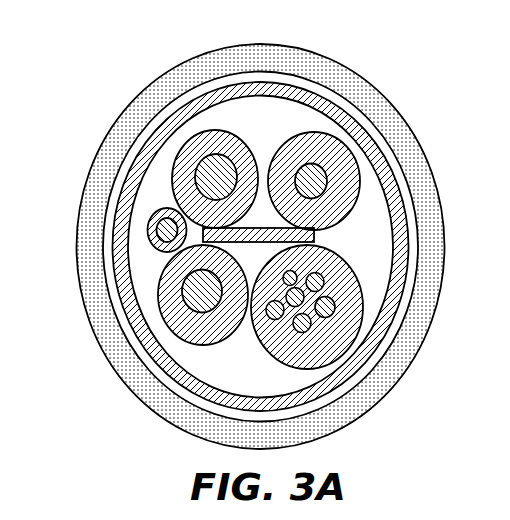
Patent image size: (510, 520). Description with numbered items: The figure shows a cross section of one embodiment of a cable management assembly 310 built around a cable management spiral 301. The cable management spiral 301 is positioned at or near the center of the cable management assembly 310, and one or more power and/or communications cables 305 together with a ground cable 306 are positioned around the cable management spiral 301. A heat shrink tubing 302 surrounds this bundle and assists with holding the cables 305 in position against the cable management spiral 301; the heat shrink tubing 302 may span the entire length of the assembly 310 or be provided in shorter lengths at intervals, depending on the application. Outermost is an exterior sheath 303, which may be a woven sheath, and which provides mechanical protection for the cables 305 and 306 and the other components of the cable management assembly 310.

The cable management assembly 310 is at (346, 59).
The exterior sheath 303 is at (385, 125).
The heat shrink tubing 302 is at (399, 197).
The cable management spiral 301 is at (316, 239).
The power and/or communications cables 305 is at (287, 148).
The ground cable 306 is at (147, 231).